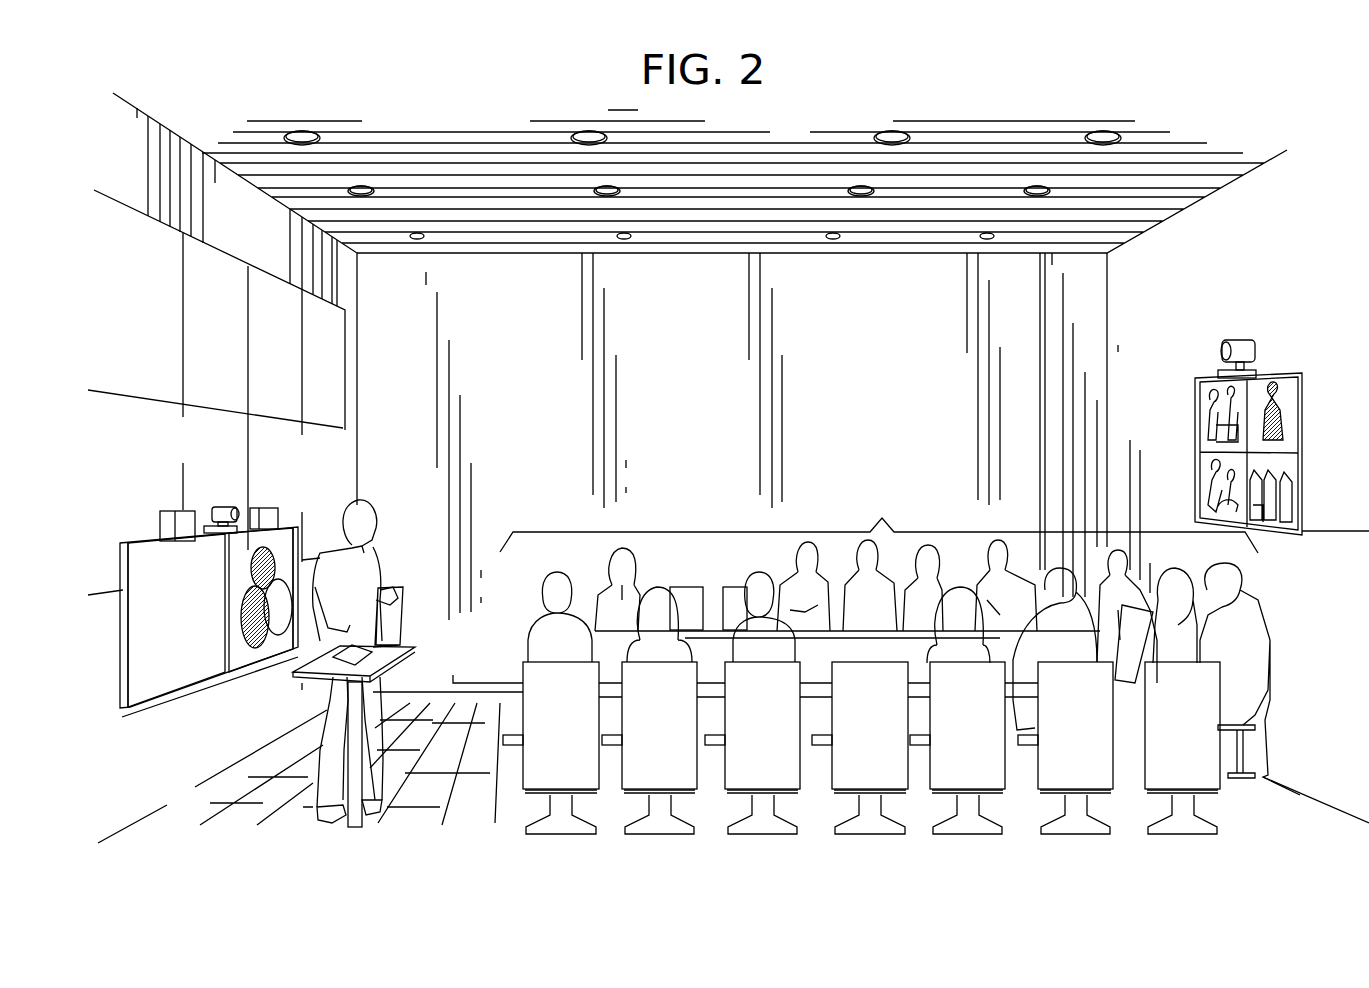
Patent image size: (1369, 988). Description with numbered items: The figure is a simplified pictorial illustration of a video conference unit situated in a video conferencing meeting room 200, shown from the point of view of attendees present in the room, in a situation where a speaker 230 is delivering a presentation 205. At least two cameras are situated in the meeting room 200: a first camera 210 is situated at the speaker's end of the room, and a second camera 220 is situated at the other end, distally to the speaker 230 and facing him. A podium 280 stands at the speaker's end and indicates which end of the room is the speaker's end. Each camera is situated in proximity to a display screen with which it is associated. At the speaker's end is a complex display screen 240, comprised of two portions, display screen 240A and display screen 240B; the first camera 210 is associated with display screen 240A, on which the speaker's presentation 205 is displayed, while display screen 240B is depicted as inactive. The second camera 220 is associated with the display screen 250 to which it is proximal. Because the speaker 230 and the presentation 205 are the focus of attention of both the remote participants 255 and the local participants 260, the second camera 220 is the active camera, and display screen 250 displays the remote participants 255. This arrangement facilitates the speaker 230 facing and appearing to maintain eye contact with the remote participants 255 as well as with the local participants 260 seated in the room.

The video conferencing meeting room 200 is at (977, 153).
The presentation 205 is at (245, 620).
The first camera 210 is at (221, 505).
The second camera 220 is at (1240, 338).
The speaker 230 is at (362, 513).
The display screen 240 is at (216, 598).
The display screen 240A is at (290, 530).
The display screen 240B is at (140, 580).
The display screen 250 is at (1272, 459).
The remote participants 255 is at (1218, 485).
The local participants 260 is at (836, 657).
The podium 280 is at (410, 668).